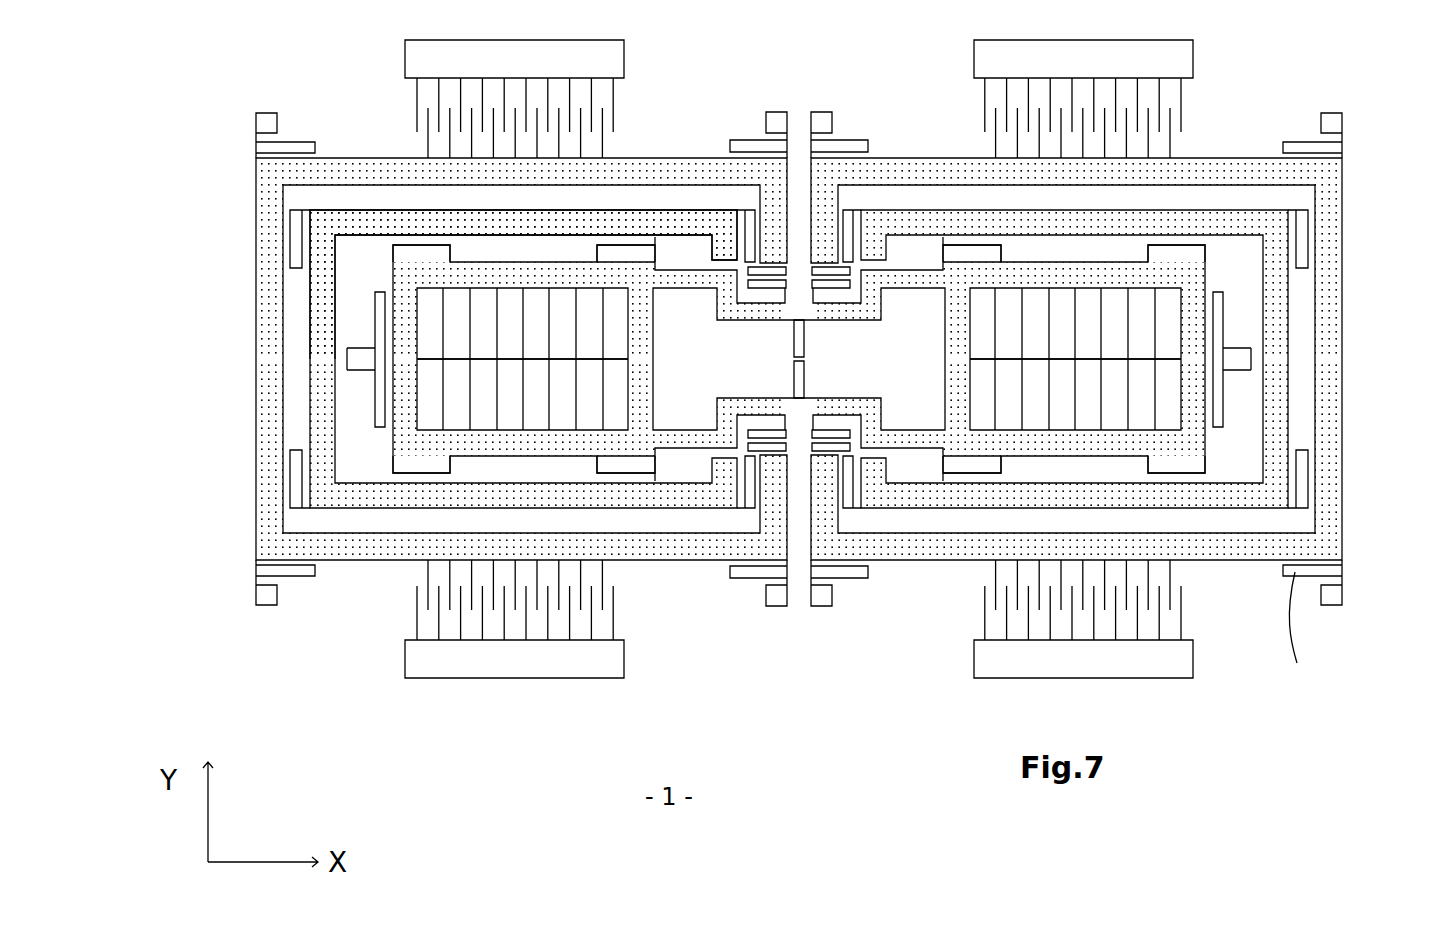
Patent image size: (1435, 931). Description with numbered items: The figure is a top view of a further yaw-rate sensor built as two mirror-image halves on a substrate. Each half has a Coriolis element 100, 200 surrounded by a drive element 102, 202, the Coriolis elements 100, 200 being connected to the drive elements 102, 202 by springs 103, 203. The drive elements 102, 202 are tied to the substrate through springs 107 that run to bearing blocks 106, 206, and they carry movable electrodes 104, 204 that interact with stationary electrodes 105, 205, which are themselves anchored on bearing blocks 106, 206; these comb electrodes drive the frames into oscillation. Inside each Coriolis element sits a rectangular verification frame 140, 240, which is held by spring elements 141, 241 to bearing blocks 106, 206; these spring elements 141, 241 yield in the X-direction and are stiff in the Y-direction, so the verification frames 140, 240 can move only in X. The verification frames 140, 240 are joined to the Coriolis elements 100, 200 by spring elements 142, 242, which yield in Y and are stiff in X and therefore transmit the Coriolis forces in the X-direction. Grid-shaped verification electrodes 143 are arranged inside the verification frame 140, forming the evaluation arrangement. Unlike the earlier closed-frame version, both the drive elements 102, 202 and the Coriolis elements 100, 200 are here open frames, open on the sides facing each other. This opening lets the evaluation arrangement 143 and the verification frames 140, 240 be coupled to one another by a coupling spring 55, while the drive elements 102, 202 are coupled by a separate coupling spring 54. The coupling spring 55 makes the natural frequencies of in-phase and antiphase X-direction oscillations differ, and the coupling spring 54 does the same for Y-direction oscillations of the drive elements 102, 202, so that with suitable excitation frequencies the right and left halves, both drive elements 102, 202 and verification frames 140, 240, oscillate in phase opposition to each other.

The coupling spring 54 is at (803, 290).
The coupling spring 55 is at (794, 380).
The Coriolis element 100 is at (310, 437).
The drive element 102 is at (257, 540).
The spring 103 is at (290, 493).
The movable electrode 104 is at (423, 577).
The stationary electrode 105 is at (420, 618).
The bearing block 106 is at (345, 362).
The spring 107 is at (297, 578).
The verification frame 140 is at (403, 333).
The spring element 141 is at (375, 407).
The spring element 142 is at (335, 260).
The verification electrodes 143 is at (507, 310).
The Coriolis element 200 is at (1270, 227).
The drive element 202 is at (1330, 227).
The spring 203 is at (1300, 242).
The movable electrode 204 is at (983, 583).
The stationary electrode 205 is at (983, 620).
The bearing block 206 is at (1240, 367).
The verification frame 240 is at (1215, 425).
The spring element 241 is at (1220, 317).
The spring element 242 is at (1000, 458).